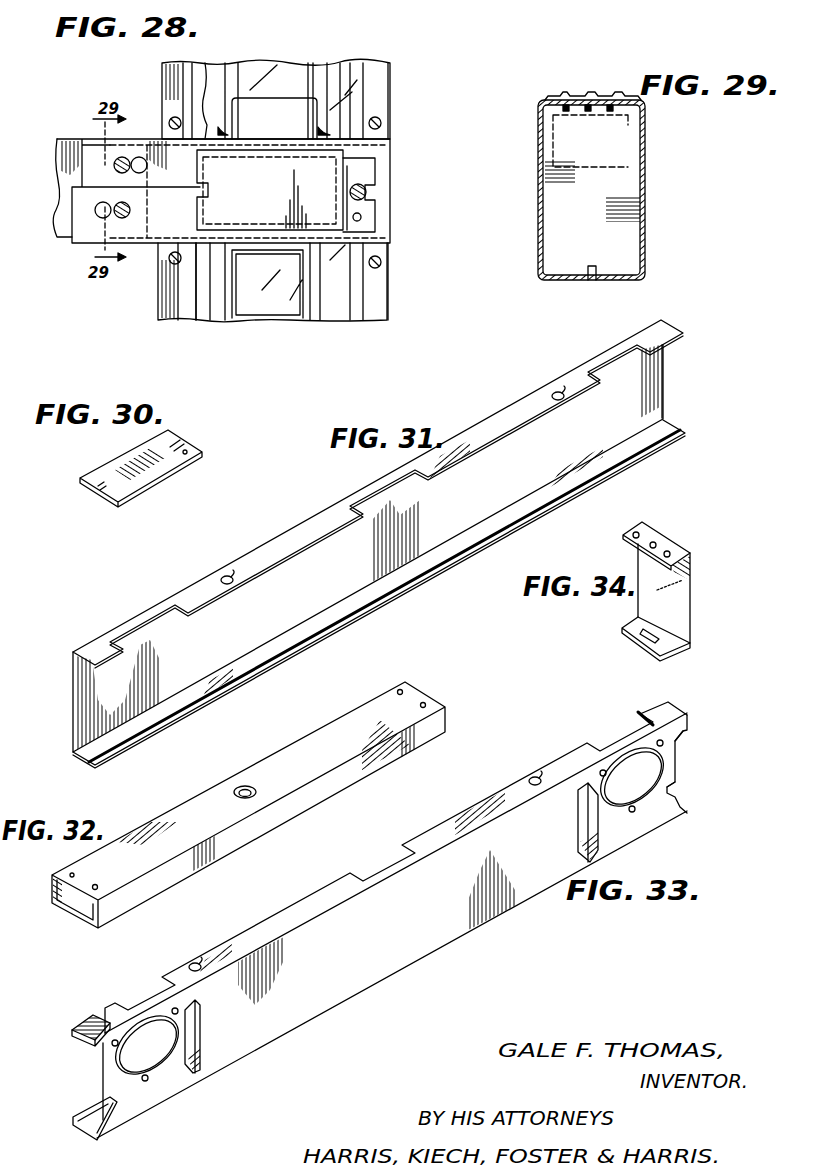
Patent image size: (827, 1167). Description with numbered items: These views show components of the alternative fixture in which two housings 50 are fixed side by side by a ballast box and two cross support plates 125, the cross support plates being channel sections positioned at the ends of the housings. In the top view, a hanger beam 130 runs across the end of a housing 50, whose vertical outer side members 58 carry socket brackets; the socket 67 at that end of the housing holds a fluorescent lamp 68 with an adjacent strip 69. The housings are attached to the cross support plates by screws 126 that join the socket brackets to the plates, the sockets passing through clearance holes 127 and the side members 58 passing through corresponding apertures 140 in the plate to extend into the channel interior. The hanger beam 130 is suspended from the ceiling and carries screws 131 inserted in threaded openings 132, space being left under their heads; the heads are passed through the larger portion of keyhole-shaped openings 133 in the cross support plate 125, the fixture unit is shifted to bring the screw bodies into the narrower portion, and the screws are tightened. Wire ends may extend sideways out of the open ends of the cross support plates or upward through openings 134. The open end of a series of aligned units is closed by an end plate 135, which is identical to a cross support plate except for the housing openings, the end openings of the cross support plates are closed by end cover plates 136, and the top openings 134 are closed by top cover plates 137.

In FIG. 28, the housing 50 is at (178, 330).
In FIG. 28, the outer side member 58 is at (388, 98).
In FIG. 28, the socket 67 is at (341, 306).
In FIG. 28, the fluorescent lamp 68 is at (204, 136).
In FIG. 28, the panel strip 69 is at (338, 80).
In FIG. 28, the cross support plate 125 is at (90, 145).
In FIG. 29, the cross support plate 125 is at (645, 215).
In FIG. 31, the cross support plate 125 is at (393, 544).
In FIG. 33, the cross support plate 125 is at (392, 911).
In FIG. 28, the screw 126 is at (206, 322).
In FIG. 33, the clearance hole 127 is at (138, 1023).
In FIG. 28, the hanger beam 130 is at (62, 140).
In FIG. 29, the hanger beam 130 is at (645, 135).
In FIG. 32, the hanger beam 130 is at (348, 748).
In FIG. 28, the screw 131 is at (122, 157).
In FIG. 29, the screw 131 is at (566, 97).
In FIG. 32, the threaded opening 132 is at (403, 690).
In FIG. 28, the keyhole-shaped opening 133 is at (139, 157).
In FIG. 31, the keyhole-shaped opening 133 is at (232, 576).
In FIG. 33, the keyhole-shaped opening 133 is at (197, 963).
In FIG. 28, the opening 134 is at (333, 177).
In FIG. 31, the opening 134 is at (180, 612).
In FIG. 33, the opening 134 is at (172, 984).
In FIG. 31, the end plate 135 is at (656, 382).
In FIG. 29, the end cover plate 136 is at (625, 262).
In FIG. 34, the end cover plate 136 is at (690, 618).
In FIG. 28, the top cover plate 137 is at (325, 168).
In FIG. 29, the top cover plate 137 is at (560, 100).
In FIG. 30, the top cover plate 137 is at (165, 478).
In FIG. 33, the aperture 140 is at (101, 1078).